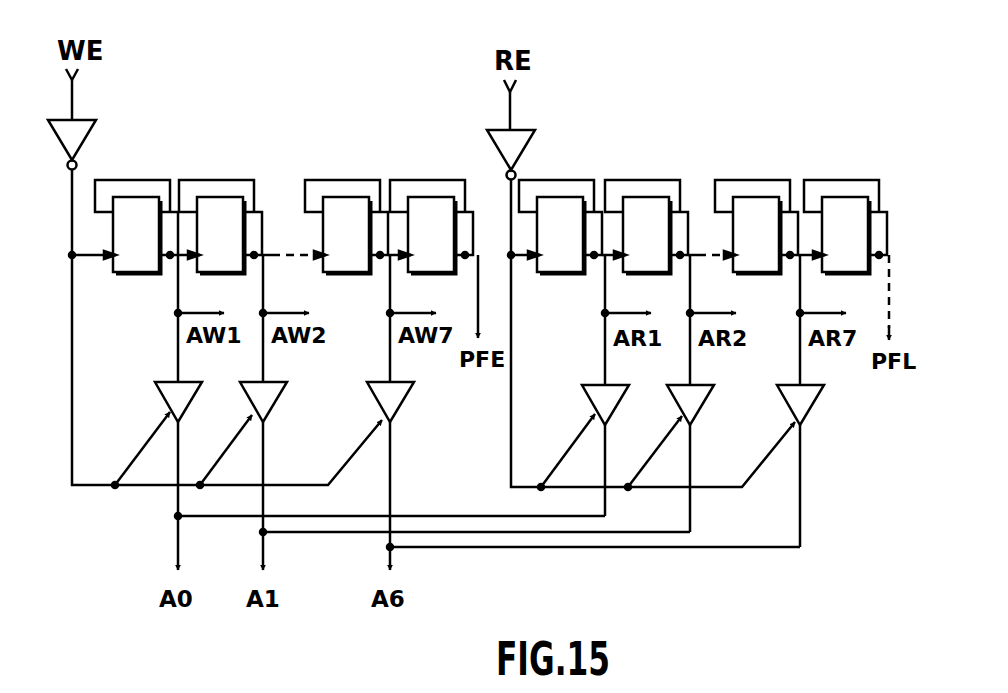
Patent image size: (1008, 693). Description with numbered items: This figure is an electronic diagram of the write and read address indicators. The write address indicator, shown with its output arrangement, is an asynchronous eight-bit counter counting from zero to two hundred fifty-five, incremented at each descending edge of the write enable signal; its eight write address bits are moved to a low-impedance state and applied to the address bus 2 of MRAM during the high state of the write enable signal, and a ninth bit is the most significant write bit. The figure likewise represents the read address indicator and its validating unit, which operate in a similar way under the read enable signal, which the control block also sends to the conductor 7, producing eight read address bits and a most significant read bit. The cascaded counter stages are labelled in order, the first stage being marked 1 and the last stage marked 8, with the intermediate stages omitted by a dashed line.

The first register stage 1 is at (348, 227).
The address bus 2 is at (433, 227).
The conductor 7 is at (551, 227).
The eighth register stage 8 is at (638, 227).